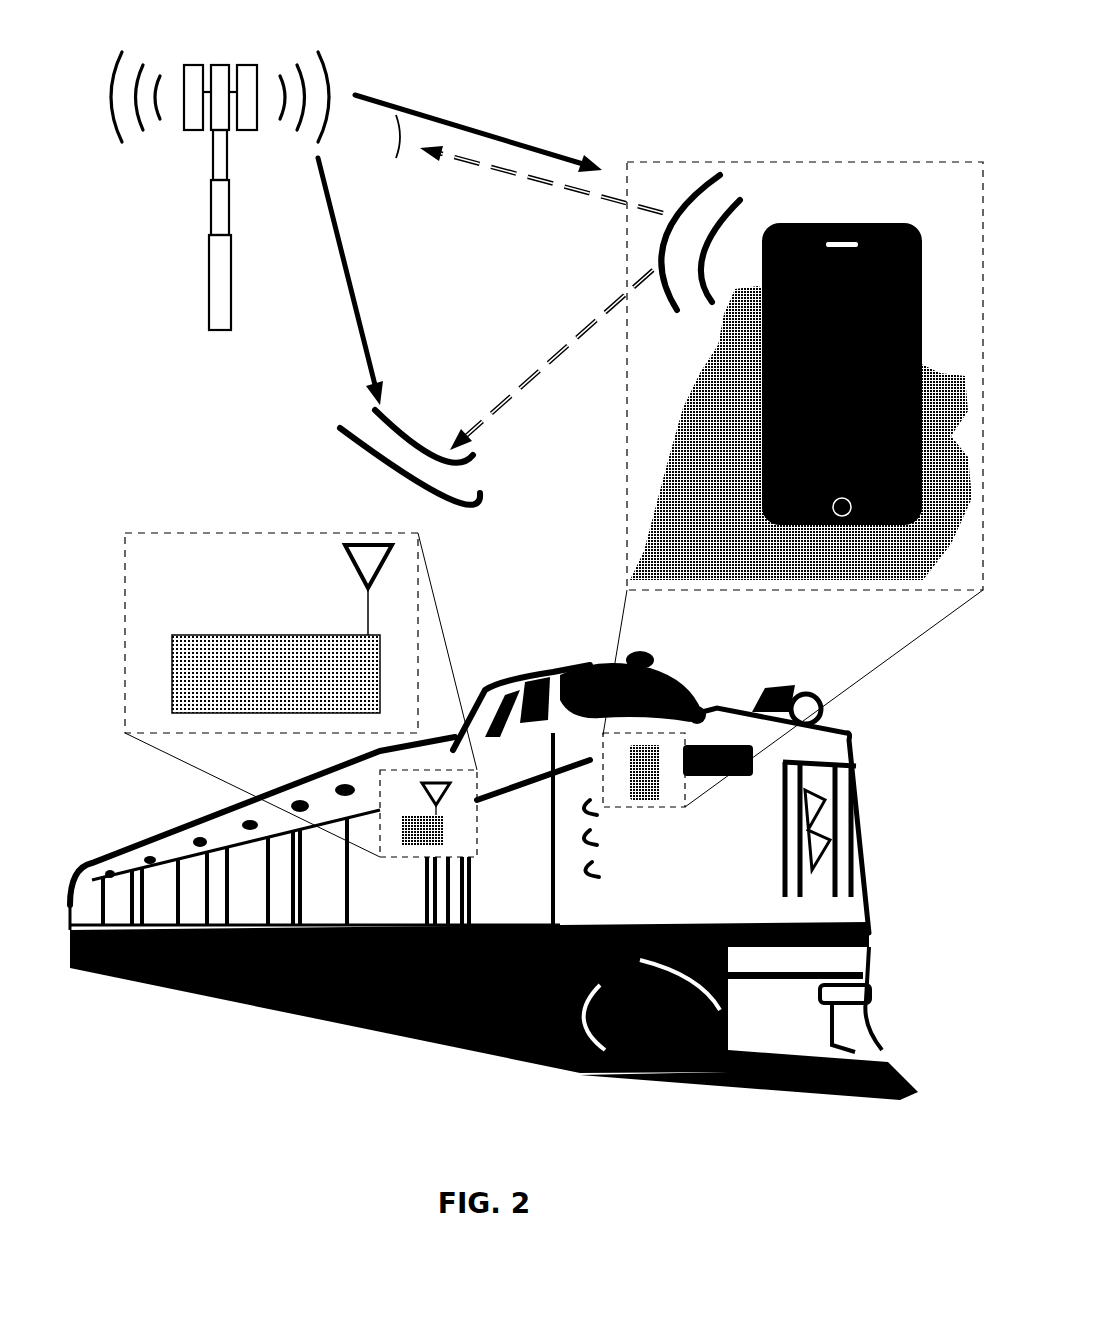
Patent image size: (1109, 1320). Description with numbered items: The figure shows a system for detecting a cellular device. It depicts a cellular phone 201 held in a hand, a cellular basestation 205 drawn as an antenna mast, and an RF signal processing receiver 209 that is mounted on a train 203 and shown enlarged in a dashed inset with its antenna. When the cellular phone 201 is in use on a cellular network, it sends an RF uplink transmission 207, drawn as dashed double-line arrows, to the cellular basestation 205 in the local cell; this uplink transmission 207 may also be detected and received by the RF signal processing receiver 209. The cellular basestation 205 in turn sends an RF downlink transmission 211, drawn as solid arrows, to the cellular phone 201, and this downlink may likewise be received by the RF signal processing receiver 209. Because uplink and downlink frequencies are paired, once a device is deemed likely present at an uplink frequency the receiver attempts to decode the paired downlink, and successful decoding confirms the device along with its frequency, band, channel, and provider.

The cellular phone 201 is at (829, 225).
The train 203 is at (858, 768).
The cellular basestation 205 is at (219, 63).
The RF uplink transmission 207 is at (560, 202).
The RF signal processing receiver 209 is at (260, 627).
The RF downlink transmission 211 is at (343, 231).